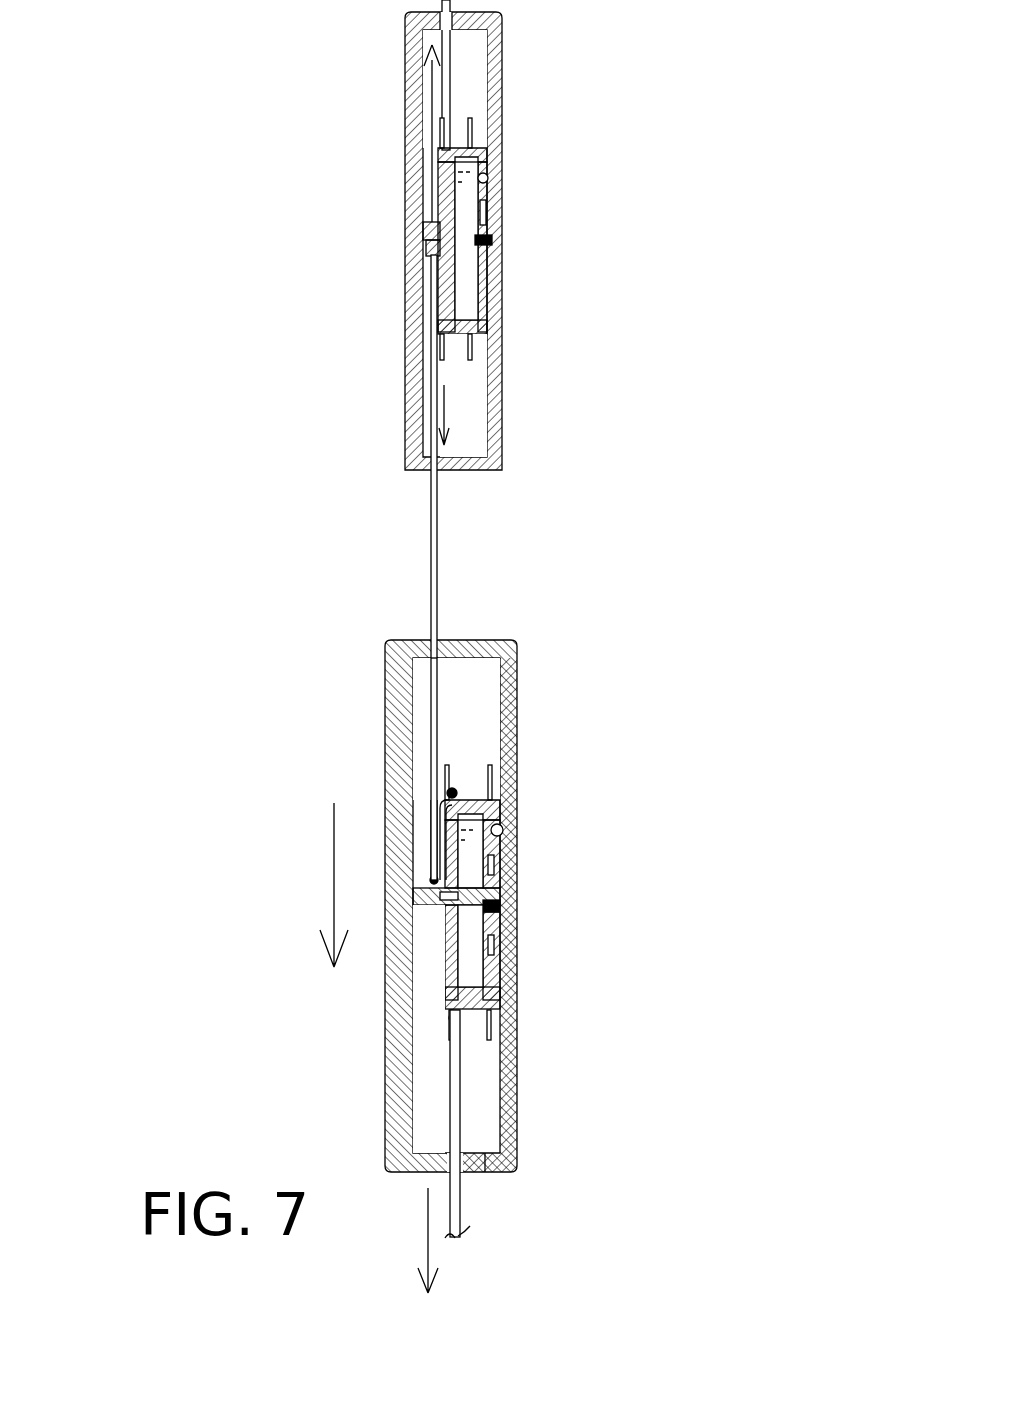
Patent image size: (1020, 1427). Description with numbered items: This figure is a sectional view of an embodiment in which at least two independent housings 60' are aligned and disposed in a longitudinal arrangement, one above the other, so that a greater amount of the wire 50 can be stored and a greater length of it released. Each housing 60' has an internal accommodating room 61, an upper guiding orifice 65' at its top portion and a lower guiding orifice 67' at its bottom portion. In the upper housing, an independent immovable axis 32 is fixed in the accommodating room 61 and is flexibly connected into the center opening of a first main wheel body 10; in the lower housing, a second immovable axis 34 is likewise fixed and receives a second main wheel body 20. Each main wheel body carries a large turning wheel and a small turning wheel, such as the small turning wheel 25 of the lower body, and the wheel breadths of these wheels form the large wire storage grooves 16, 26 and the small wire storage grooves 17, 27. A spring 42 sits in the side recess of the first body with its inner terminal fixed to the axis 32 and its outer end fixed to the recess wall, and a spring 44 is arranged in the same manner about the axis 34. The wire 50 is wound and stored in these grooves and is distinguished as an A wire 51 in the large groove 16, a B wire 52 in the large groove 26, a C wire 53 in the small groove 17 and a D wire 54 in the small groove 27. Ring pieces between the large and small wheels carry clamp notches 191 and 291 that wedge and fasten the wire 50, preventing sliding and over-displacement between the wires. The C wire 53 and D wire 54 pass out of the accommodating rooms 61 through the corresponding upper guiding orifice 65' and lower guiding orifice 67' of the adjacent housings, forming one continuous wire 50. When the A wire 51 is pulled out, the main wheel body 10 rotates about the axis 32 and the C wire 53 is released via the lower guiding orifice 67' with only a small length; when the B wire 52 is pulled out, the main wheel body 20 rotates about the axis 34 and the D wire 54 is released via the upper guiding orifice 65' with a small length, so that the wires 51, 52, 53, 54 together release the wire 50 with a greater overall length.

The main wheel body 10 is at (500, 140).
The large wire storage groove 16 is at (458, 125).
The small wire storage groove 17 is at (433, 212).
The main wheel body 20 is at (482, 808).
The small turning wheel 25 is at (440, 897).
The large wire storage groove 26 is at (470, 770).
The small wire storage groove 27 is at (436, 940).
The immovable axis 32 is at (450, 225).
The immovable axis 34 is at (425, 912).
The spring 42 is at (457, 192).
The spring 44 is at (473, 890).
The wire 50 is at (460, 530).
The A wire 51 is at (447, 42).
The B wire 52 is at (458, 1103).
The C wire 53 is at (435, 382).
The D wire 54 is at (440, 735).
The housing 60' is at (460, 592).
The accommodating room 61 is at (433, 42).
The upper guiding orifice 65' is at (537, 320).
The lower guiding orifice 67' is at (474, 845).
The clamp notch 191 is at (445, 122).
The clamp notch 291 is at (448, 783).